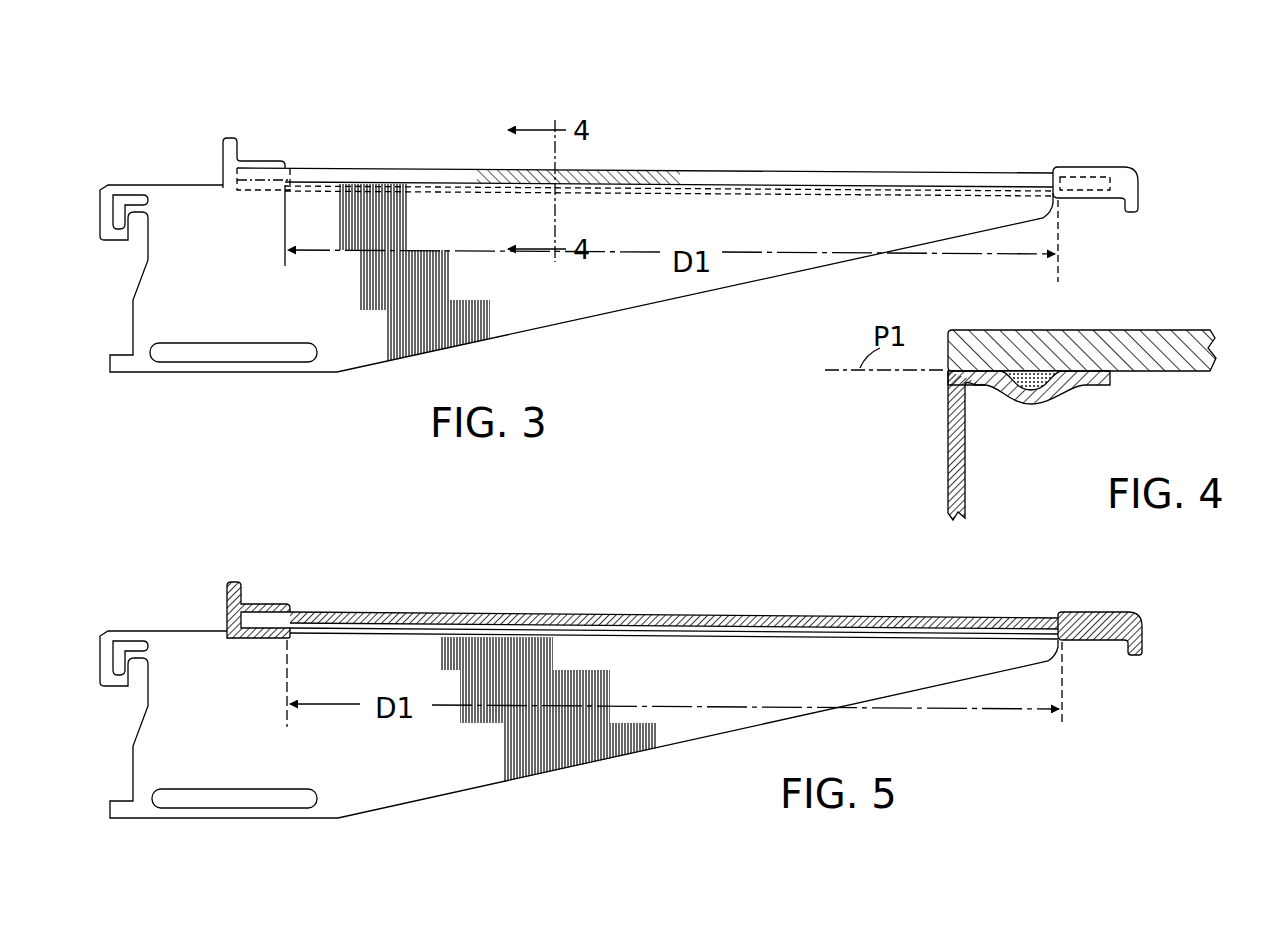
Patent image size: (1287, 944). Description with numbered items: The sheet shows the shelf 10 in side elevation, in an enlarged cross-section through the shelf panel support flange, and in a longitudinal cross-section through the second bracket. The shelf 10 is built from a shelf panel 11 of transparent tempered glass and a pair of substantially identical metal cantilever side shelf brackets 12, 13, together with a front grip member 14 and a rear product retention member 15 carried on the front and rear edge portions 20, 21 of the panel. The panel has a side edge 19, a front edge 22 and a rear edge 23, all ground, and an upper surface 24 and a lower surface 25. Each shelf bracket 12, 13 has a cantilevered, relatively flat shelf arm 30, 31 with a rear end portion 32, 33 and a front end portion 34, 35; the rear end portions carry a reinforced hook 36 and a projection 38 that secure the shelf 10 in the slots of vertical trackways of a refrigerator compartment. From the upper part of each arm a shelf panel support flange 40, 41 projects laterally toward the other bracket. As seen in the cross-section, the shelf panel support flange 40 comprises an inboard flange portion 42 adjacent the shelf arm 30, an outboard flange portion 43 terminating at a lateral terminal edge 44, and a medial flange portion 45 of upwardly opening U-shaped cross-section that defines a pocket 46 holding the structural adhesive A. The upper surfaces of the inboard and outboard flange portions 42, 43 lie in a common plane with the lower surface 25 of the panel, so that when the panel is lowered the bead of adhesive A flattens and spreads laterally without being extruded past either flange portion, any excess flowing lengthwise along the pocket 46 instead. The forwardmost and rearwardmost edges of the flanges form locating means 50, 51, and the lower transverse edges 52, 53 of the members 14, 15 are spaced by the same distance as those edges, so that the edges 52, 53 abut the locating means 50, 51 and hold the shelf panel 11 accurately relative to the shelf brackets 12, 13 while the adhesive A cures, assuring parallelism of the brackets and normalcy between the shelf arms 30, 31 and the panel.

In FIG. 3, the shelf 10 is at (706, 110).
In FIG. 4, the shelf 10 is at (1224, 246).
In FIG. 5, the shelf 10 is at (568, 530).
In FIG. 3, the shelf panel 11 is at (428, 166).
In FIG. 4, the shelf panel 11 is at (1200, 328).
In FIG. 5, the shelf panel 11 is at (632, 610).
In FIG. 3, the shelf bracket 12 is at (684, 312).
In FIG. 4, the shelf bracket 12 is at (950, 512).
In FIG. 5, the shelf bracket 13 is at (430, 802).
In FIG. 3, the front grip member 14 is at (1132, 160).
In FIG. 5, the front grip member 14 is at (1130, 608).
In FIG. 3, the rear product retention member 15 is at (238, 140).
In FIG. 5, the rear product retention member 15 is at (265, 605).
In FIG. 3, the side edge 19 is at (676, 188).
In FIG. 4, the side edge 19 is at (946, 332).
In FIG. 3, the front edge portion 20 is at (1083, 175).
In FIG. 5, the front edge portion 20 is at (1082, 625).
In FIG. 3, the rear edge portion 21 is at (270, 180).
In FIG. 5, the rear edge portion 21 is at (245, 638).
In FIG. 3, the front edge 22 is at (1140, 178).
In FIG. 5, the front edge 22 is at (1143, 622).
In FIG. 3, the rear edge 23 is at (228, 168).
In FIG. 5, the rear edge 23 is at (227, 618).
In FIG. 3, the upper surface 24 is at (760, 169).
In FIG. 4, the upper surface 24 is at (1164, 330).
In FIG. 5, the upper surface 24 is at (710, 613).
In FIG. 3, the lower surface 25 is at (872, 190).
In FIG. 4, the lower surface 25 is at (1190, 372).
In FIG. 5, the lower surface 25 is at (786, 634).
In FIG. 3, the shelf arm 30 is at (610, 300).
In FIG. 4, the shelf arm 30 is at (968, 500).
In FIG. 5, the shelf arm 31 is at (692, 725).
In FIG. 3, the rear end portion 32 is at (204, 286).
In FIG. 5, the rear end portion 33 is at (198, 763).
In FIG. 3, the front end portion 34 is at (965, 230).
In FIG. 5, the front end portion 35 is at (986, 672).
In FIG. 3, the reinforced hook 36 is at (110, 238).
In FIG. 5, the reinforced hook 36 is at (110, 636).
In FIG. 3, the projection 38 is at (116, 372).
In FIG. 5, the projection 38 is at (118, 819).
In FIG. 3, the shelf panel support flange 40 is at (440, 190).
In FIG. 4, the shelf panel support flange 40 is at (1088, 396).
In FIG. 5, the shelf panel support flange 41 is at (660, 641).
In FIG. 4, the inboard flange portion 42 is at (975, 386).
In FIG. 4, the outboard flange portion 43 is at (1112, 385).
In FIG. 4, the lateral terminal edge 44 is at (1125, 348).
In FIG. 4, the medial flange portion 45 is at (1040, 406).
In FIG. 4, the pocket 46 is at (1024, 380).
In FIG. 3, the locating means 50 is at (1058, 196).
In FIG. 5, the locating means 50 is at (1062, 644).
In FIG. 3, the locating means 51 is at (278, 192).
In FIG. 5, the locating means 51 is at (282, 640).
In FIG. 3, the lower transverse edge 52 is at (1058, 195).
In FIG. 5, the lower transverse edge 52 is at (1058, 640).
In FIG. 3, the lower transverse edge 53 is at (290, 182).
In FIG. 5, the lower transverse edge 53 is at (292, 630).
In FIG. 4, the structural adhesive A is at (1052, 386).